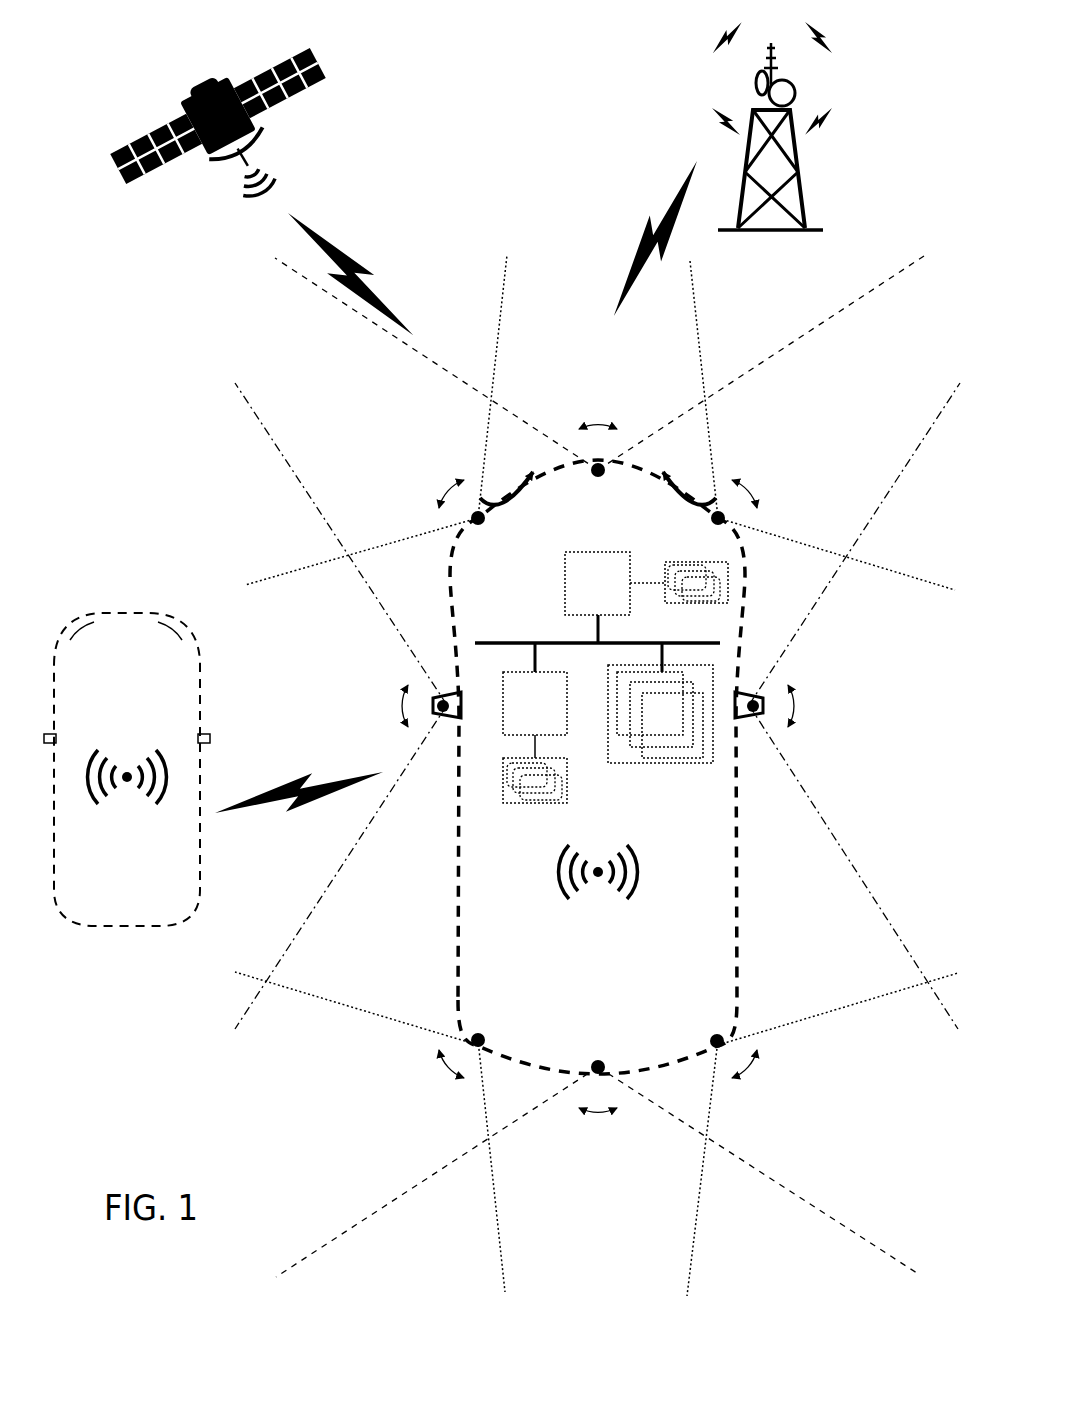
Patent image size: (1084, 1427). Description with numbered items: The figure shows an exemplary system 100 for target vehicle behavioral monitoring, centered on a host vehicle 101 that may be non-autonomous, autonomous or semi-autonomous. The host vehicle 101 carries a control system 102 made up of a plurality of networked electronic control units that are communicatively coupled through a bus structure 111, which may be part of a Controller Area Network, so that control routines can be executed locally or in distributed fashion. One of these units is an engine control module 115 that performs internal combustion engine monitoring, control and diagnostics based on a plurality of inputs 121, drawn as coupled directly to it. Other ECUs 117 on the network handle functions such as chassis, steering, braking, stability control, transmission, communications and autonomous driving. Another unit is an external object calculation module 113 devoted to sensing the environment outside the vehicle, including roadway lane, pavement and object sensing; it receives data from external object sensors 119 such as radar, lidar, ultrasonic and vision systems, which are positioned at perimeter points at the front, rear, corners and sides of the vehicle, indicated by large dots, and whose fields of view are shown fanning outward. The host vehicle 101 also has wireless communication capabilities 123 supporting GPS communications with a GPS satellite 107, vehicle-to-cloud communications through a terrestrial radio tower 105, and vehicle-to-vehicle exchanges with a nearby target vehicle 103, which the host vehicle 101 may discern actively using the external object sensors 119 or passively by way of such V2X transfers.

The system 100 is at (540, 64).
The host vehicle 101 is at (738, 838).
The control system 102 is at (601, 695).
The target vehicle 103 is at (128, 612).
The terrestrial radio tower 105 is at (832, 200).
The GPS satellite 107 is at (167, 77).
The bus structure 111 is at (540, 618).
The external object calculation module 113 is at (597, 583).
The engine control module 115 is at (535, 703).
The other ECUs 117 is at (660, 714).
The external object sensors 119 is at (712, 561).
The inputs 121 is at (532, 803).
The wireless communication capabilities 123 is at (648, 873).